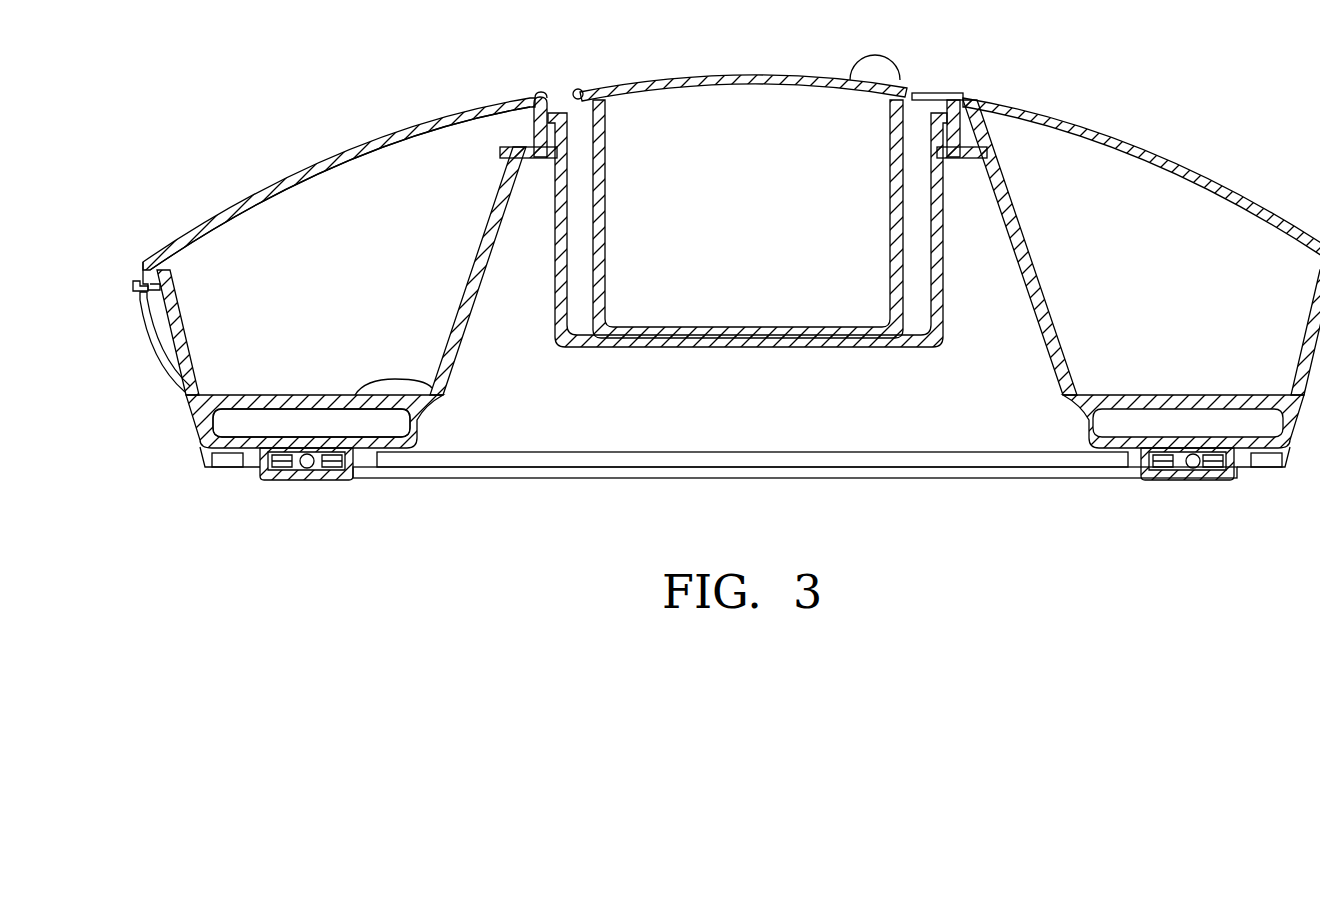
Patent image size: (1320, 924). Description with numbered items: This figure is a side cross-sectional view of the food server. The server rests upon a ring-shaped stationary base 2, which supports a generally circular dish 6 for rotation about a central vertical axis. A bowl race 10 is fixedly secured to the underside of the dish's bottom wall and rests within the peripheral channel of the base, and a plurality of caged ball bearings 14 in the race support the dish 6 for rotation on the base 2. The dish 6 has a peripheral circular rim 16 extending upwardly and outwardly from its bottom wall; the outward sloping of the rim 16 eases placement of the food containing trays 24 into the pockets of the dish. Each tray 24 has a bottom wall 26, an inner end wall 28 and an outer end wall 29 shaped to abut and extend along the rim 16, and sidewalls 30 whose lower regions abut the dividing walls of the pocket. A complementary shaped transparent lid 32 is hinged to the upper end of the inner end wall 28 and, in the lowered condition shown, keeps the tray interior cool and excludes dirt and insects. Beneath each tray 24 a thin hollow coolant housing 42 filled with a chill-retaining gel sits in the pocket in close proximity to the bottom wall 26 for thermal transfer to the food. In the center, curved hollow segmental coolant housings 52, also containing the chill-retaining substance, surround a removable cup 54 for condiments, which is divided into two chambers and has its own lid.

The stationary base 2 is at (260, 489).
The dish 6 is at (188, 438).
The bowl race 10 is at (340, 472).
The caged ball bearings 14 is at (305, 470).
The peripheral circular rim 16 is at (178, 395).
The food containing tray 24 is at (160, 344).
The bottom wall 26 is at (432, 388).
The inner end wall 28 is at (500, 222).
The outer end wall 29 is at (165, 318).
The sidewall 30 is at (265, 225).
The lid 32 is at (350, 150).
The coolant housing 42 is at (397, 422).
The coolant housing 52 is at (556, 285).
The removable cup 54 is at (676, 103).